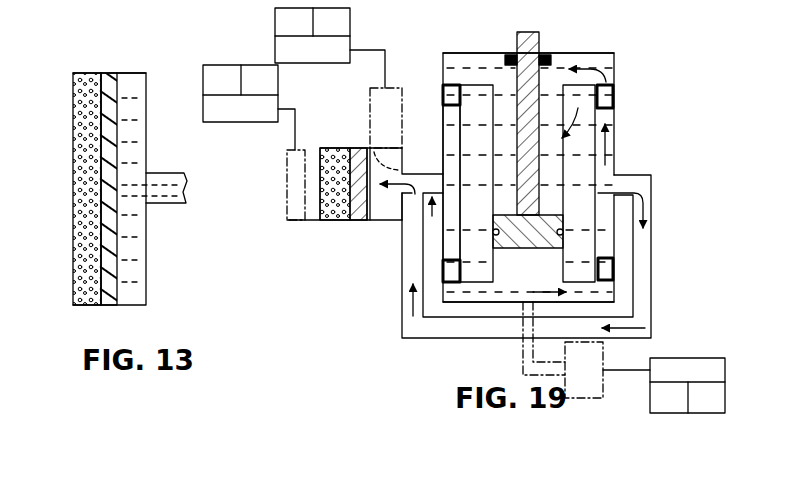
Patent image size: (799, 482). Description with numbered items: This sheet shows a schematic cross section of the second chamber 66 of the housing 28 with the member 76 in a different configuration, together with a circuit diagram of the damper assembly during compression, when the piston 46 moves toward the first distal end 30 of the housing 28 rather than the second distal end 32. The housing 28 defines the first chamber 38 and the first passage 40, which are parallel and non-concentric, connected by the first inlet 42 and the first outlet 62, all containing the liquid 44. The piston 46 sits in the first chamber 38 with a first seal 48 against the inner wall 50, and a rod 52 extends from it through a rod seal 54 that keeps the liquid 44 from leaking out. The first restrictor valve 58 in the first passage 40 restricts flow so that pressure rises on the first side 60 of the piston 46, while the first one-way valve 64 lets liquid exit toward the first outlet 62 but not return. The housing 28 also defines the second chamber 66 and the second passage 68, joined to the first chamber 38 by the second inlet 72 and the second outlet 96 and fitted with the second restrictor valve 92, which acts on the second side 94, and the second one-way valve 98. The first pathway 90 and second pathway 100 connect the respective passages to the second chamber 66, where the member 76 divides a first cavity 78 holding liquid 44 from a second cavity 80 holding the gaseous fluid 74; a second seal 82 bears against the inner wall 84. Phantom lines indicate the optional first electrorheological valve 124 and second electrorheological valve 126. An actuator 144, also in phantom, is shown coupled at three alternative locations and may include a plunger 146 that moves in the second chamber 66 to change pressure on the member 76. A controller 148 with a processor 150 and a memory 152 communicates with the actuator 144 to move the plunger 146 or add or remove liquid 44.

In FIG. 19, the housing 28 is at (640, 58).
In FIG. 19, the first distal end 30 is at (515, 303).
In FIG. 19, the second distal end 32 is at (505, 52).
In FIG. 19, the first chamber 38 is at (578, 183).
In FIG. 19, the first passage 40 is at (608, 165).
In FIG. 19, the first inlet 42 is at (600, 296).
In FIG. 13, the liquid 44 is at (136, 84).
In FIG. 19, the piston 46 is at (548, 226).
In FIG. 19, the first seal 48 is at (494, 230).
In FIG. 19, the inner wall 50 is at (557, 178).
In FIG. 19, the rod 52 is at (536, 36).
In FIG. 19, the rod seal 54 is at (514, 53).
In FIG. 19, the first restrictor valve 58 is at (615, 268).
In FIG. 19, the first side 60 is at (554, 250).
In FIG. 19, the first outlet 62 is at (586, 60).
In FIG. 19, the first one-way valve 64 is at (610, 96).
In FIG. 13, the second chamber 66 is at (147, 268).
In FIG. 19, the second chamber 66 is at (340, 222).
In FIG. 19, the second passage 68 is at (462, 170).
In FIG. 19, the second inlet 72 is at (469, 66).
In FIG. 13, the gaseous fluid 74 is at (90, 84).
In FIG. 19, the gaseous fluid 74 is at (340, 160).
In FIG. 13, the member 76 is at (110, 290).
In FIG. 19, the member 76 is at (360, 219).
In FIG. 13, the first cavity 78 is at (132, 233).
In FIG. 19, the first cavity 78 is at (398, 206).
In FIG. 13, the second cavity 80 is at (74, 244).
In FIG. 19, the second cavity 80 is at (328, 206).
In FIG. 19, the second seal 82 is at (362, 160).
In FIG. 19, the inner wall 84 is at (408, 184).
In FIG. 19, the first pathway 90 is at (650, 178).
In FIG. 19, the second restrictor valve 92 is at (452, 88).
In FIG. 19, the second side 94 is at (500, 215).
In FIG. 19, the second outlet 96 is at (468, 294).
In FIG. 19, the second one-way valve 98 is at (415, 304).
In FIG. 19, the second pathway 100 is at (405, 215).
In FIG. 19, the first electrorheological valve 124 is at (598, 193).
In FIG. 19, the second electrorheological valve 126 is at (451, 150).
In FIG. 19, the actuator 144 is at (390, 80).
In FIG. 19, the plunger 146 is at (292, 204).
In FIG. 19, the controller 148 is at (275, 27).
In FIG. 19, the processor 150 is at (308, 32).
In FIG. 19, the memory 152 is at (346, 32).